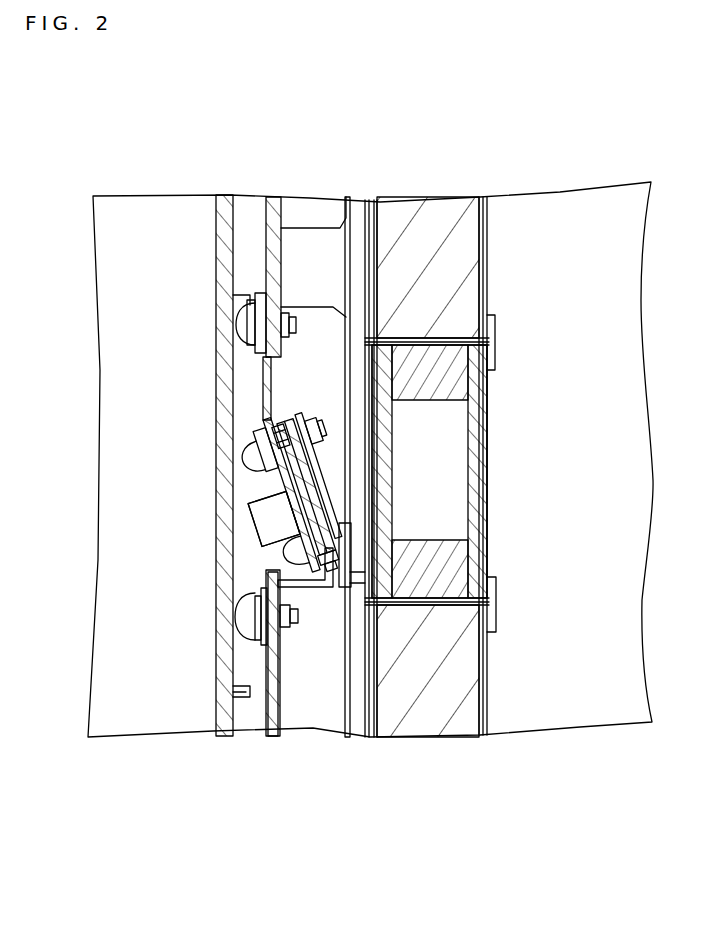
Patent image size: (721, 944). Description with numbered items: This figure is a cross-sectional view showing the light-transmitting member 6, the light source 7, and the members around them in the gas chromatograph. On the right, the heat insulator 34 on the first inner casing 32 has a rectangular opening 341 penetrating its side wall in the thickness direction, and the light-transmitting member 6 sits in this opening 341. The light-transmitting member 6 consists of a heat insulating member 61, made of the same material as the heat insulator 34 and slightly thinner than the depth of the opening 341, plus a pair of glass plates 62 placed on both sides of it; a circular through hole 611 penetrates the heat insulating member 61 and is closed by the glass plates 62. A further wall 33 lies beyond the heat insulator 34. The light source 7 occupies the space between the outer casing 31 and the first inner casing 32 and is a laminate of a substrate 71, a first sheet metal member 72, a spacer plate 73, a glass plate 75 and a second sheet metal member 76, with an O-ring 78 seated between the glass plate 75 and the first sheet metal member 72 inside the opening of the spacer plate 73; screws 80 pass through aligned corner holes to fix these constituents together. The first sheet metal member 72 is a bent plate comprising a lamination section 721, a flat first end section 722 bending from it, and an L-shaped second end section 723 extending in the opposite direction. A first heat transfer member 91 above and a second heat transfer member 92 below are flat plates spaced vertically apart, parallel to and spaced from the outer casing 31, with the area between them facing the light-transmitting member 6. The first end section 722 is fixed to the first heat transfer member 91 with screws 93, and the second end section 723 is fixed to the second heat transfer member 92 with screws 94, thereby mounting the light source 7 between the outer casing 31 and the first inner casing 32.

The light-transmitting member 6 is at (487, 463).
The light source 7 is at (270, 511).
The outer casing 31 is at (222, 205).
The first inner casing 32 is at (357, 200).
The third wall 33 is at (490, 228).
The heat insulator 34 is at (430, 235).
The opening 341 is at (447, 358).
The heat insulating member 61 is at (445, 378).
The through hole 611 is at (458, 515).
The glass plate 62 is at (477, 493).
The substrate 71 is at (283, 481).
The first sheet metal member 72 is at (296, 484).
The lamination section 721 is at (300, 560).
The first end section 722 is at (263, 385).
The second end section 723 is at (316, 735).
The spacer plate 73 is at (329, 588).
The glass plate 75 is at (297, 418).
The second sheet metal member 76 is at (303, 420).
The O-ring 78 is at (278, 425).
The screw 80 is at (250, 455).
The first heat transfer member 91 is at (273, 205).
The second heat transfer member 92 is at (268, 737).
The screw 93 is at (245, 322).
The screw 94 is at (243, 628).